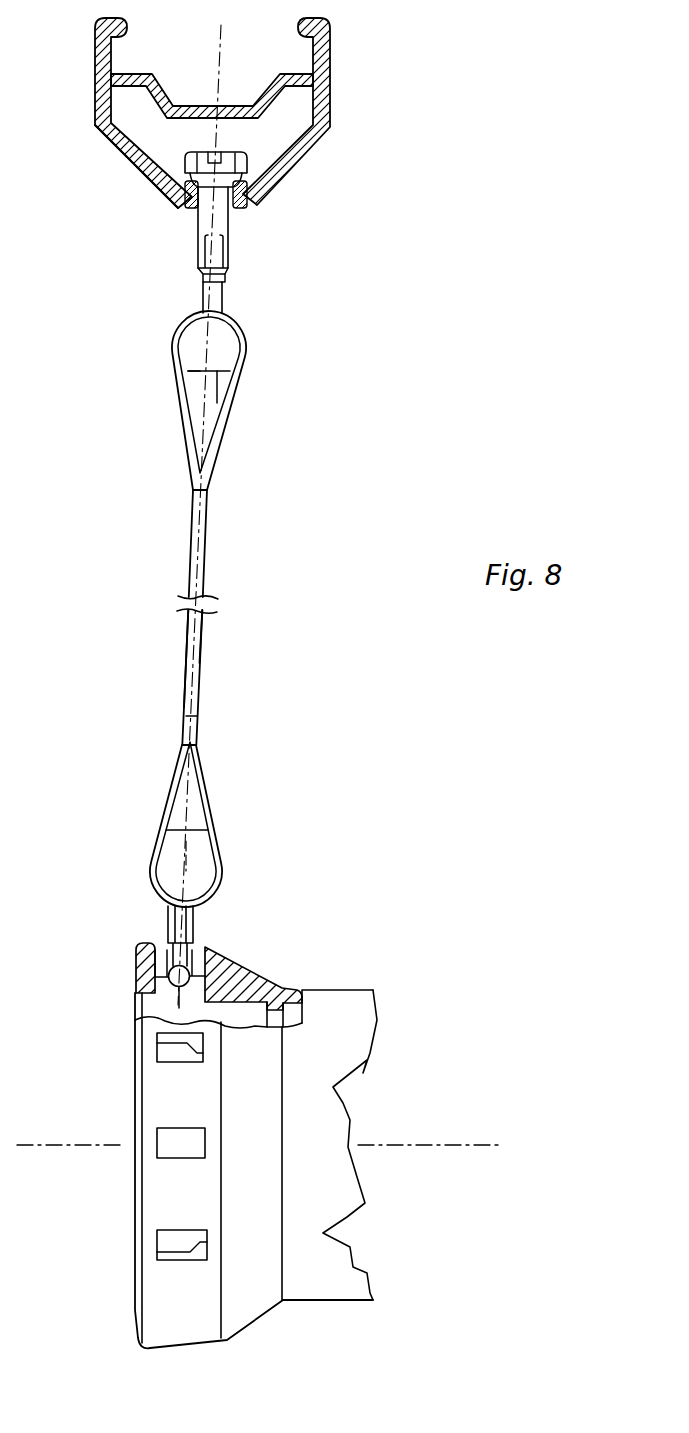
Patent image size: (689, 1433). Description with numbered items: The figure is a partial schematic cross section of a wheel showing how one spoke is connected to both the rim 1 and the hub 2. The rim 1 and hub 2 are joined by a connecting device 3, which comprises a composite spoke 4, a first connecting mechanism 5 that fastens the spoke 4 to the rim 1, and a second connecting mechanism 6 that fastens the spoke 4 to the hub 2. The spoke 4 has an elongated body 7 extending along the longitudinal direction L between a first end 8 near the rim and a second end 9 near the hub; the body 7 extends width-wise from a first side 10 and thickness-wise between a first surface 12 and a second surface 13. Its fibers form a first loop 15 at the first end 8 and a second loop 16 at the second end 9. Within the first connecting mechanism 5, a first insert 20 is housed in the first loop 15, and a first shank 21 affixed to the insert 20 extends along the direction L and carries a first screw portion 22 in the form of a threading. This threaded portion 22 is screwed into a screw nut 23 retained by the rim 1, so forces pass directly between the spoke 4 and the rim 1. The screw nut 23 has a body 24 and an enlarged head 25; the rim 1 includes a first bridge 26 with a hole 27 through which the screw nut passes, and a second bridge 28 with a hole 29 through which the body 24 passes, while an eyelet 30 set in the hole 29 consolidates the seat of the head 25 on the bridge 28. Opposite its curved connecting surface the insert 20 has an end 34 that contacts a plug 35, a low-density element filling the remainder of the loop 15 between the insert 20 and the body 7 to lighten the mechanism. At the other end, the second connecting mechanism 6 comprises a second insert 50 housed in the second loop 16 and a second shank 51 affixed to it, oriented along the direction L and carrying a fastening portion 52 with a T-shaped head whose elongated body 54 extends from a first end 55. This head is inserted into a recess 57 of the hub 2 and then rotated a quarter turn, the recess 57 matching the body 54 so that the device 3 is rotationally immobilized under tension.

The rim 1 is at (235, 113).
The hub 2 is at (340, 988).
The connecting device 3 is at (226, 609).
The composite spoke 4 is at (190, 584).
The first connecting mechanism 5 is at (237, 218).
The second connecting mechanism 6 is at (183, 973).
The elongated body 7 is at (189, 650).
The first end 8 is at (207, 402).
The second end 9 is at (237, 824).
The first side 10 is at (186, 707).
The first surface 12 is at (201, 663).
The second surface 13 is at (193, 547).
The first loop 15 is at (238, 385).
The second loop 16 is at (212, 830).
The first insert 20 is at (190, 368).
The first shank 21 is at (202, 298).
The first screw portion 22 is at (253, 295).
The screw nut 23 is at (228, 217).
The body 24 is at (200, 230).
The enlarged head 25 is at (250, 160).
The first bridge 26 is at (297, 80).
The hole 27 is at (240, 106).
The second bridge 28 is at (130, 159).
The hole 29 is at (250, 186).
The eyelet 30 is at (187, 207).
The end 34 is at (218, 405).
The plug 35 is at (211, 434).
The second insert 50 is at (200, 865).
The second shank 51 is at (194, 940).
The fastening portion 52 is at (169, 985).
The elongated body 54 is at (176, 991).
The first end 55 is at (165, 973).
The recess 57 is at (162, 955).
The longitudinal direction L is at (204, 718).